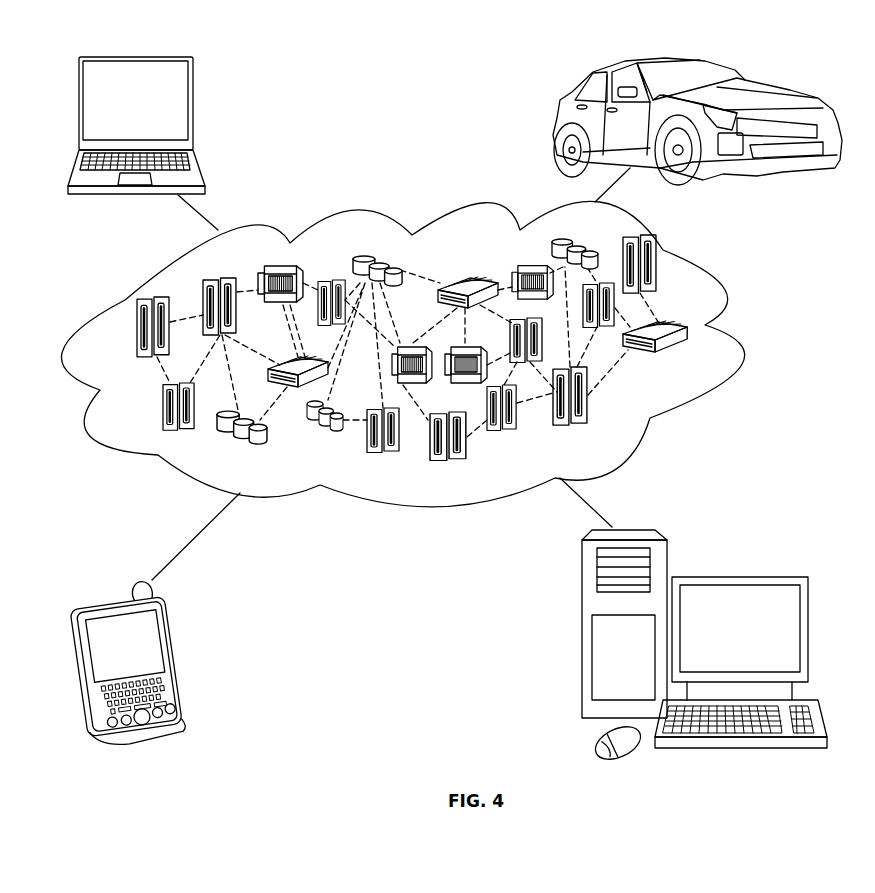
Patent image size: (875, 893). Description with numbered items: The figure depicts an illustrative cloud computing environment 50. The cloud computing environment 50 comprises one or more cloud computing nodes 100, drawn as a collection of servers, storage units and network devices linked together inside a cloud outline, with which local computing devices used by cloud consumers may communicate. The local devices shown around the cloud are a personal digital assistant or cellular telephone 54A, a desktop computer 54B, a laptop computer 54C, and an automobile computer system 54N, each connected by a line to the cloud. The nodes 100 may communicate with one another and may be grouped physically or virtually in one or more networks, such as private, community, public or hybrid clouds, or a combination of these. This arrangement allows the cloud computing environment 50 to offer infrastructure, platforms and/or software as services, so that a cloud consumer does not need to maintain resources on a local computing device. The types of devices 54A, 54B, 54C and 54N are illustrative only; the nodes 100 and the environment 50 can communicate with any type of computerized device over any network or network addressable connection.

The cloud computing environment 50 is at (740, 335).
The cloud computing node 100 is at (699, 364).
The personal digital assistant or cellular telephone 54A is at (183, 650).
The desktop computer 54B is at (738, 577).
The laptop computer 54C is at (193, 110).
The automobile computer system 54N is at (556, 118).